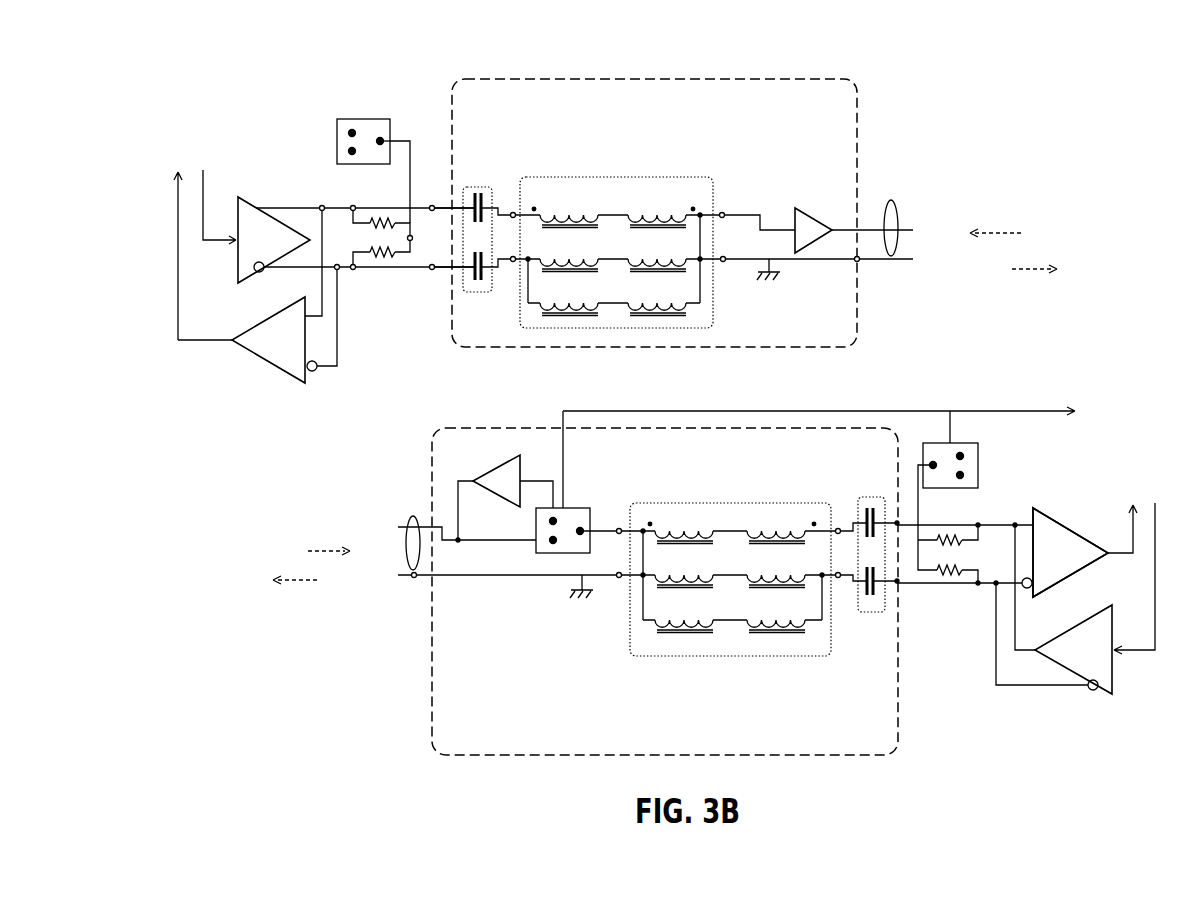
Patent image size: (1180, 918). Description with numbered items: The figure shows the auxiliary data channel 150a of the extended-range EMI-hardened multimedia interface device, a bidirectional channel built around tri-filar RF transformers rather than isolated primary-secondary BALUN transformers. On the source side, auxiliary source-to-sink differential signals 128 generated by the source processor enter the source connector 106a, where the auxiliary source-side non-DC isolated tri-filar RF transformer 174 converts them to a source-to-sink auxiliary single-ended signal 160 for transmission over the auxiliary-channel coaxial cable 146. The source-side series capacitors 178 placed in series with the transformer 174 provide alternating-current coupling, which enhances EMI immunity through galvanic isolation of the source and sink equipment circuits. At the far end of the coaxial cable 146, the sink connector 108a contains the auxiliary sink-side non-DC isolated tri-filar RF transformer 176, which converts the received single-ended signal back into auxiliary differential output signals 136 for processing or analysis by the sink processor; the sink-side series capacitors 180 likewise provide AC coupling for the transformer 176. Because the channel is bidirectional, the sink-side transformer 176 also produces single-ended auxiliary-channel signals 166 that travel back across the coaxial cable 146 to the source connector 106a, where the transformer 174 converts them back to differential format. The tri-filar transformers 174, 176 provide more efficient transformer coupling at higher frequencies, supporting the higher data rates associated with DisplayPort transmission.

The auxiliary data channel 150a is at (247, 88).
The auxiliary source-to-sink differential signals 128 is at (308, 218).
The auxiliary differential output signals 136 is at (1020, 530).
The source connector 106a is at (837, 128).
The source-side series capacitors 178 is at (477, 188).
The auxiliary source-side non-DC isolated tri-filar RF transformer 174 is at (616, 178).
The auxiliary-channel coaxial cable 146 is at (892, 200).
The single-ended auxiliary-channel signals 166 is at (668, 407).
The source-to-sink auxiliary single-ended signal 160 is at (662, 410).
The sink connector 108a is at (522, 735).
The auxiliary sink-side non-DC isolated tri-filar RF transformer 176 is at (730, 658).
The sink-side series capacitors 180 is at (868, 612).